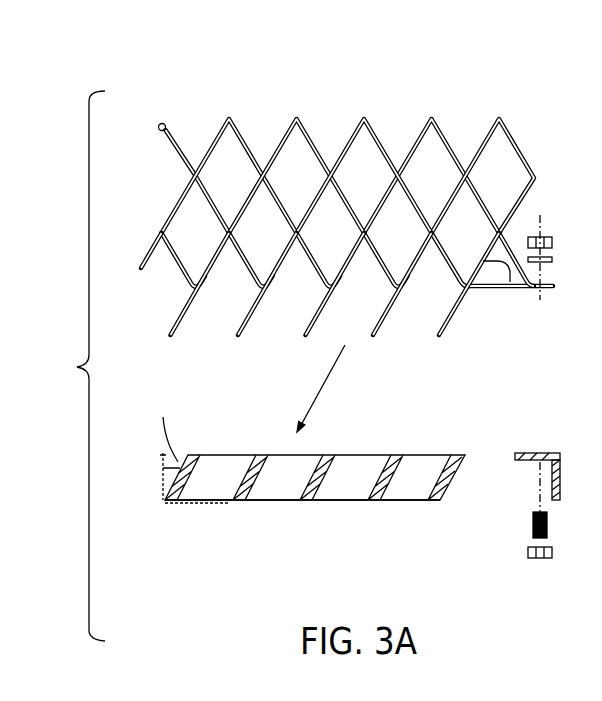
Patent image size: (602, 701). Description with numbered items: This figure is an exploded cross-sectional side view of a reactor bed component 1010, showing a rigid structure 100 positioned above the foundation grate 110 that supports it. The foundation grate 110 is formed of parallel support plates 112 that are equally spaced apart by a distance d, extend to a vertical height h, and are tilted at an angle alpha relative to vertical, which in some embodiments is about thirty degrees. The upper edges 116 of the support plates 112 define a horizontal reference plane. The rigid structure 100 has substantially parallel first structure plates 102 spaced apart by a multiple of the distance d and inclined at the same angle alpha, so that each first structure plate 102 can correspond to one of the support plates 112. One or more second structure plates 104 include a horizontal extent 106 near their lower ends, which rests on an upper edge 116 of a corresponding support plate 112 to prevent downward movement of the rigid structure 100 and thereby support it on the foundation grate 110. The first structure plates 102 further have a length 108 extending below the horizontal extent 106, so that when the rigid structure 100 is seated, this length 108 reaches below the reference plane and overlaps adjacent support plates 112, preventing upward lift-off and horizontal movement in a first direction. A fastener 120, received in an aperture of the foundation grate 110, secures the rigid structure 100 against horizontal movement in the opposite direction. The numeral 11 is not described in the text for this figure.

The reactor bed component 1010 is at (77, 367).
The rigid structure 100 is at (523, 80).
The first structure plates 102 is at (278, 142).
The second structure plates 104 is at (385, 142).
The horizontal extent 106 is at (327, 289).
The length 108 is at (324, 307).
The foundation grate 110 is at (283, 472).
The parallel support plates 112 is at (178, 473).
The upper edge 116 is at (328, 455).
The bottom edge 11 is at (388, 500).
The fastener 120 is at (540, 561).